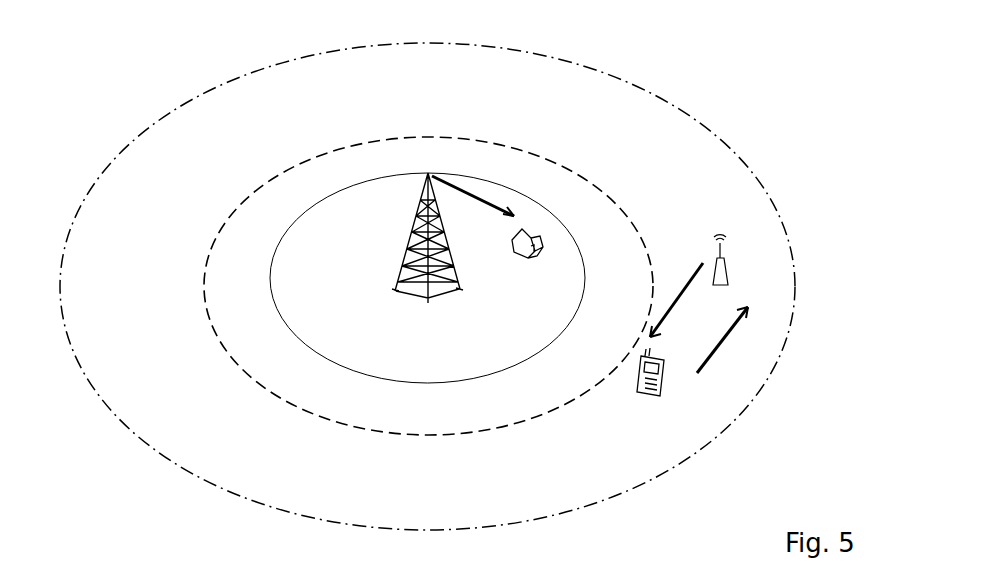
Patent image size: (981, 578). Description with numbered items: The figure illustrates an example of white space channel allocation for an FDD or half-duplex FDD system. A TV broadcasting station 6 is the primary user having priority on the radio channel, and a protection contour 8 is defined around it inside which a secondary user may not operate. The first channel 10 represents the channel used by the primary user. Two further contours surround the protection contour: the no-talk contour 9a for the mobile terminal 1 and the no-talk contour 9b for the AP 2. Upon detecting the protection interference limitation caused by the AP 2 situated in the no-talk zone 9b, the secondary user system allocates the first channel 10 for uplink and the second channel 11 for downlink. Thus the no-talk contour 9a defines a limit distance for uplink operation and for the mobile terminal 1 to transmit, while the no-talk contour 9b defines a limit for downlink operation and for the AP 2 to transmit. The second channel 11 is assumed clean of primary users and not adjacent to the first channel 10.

The mobile terminal 1 is at (660, 386).
The AP 2 is at (727, 273).
The TV broadcasting station 6 is at (447, 262).
The protection contour 8 is at (285, 233).
The no-talk contour 9a is at (477, 432).
The no-talk contour 9b is at (625, 495).
The first channel 10 is at (446, 178).
The second channel 11 is at (680, 292).